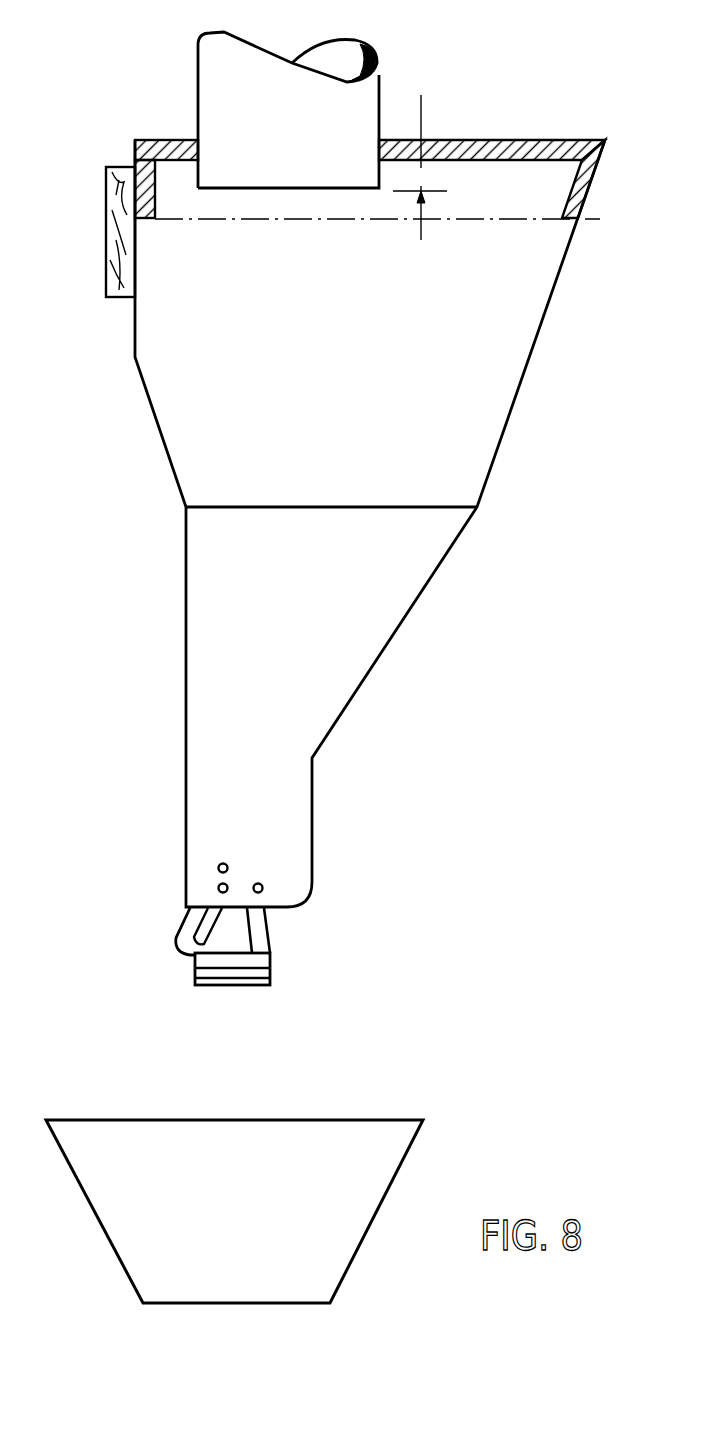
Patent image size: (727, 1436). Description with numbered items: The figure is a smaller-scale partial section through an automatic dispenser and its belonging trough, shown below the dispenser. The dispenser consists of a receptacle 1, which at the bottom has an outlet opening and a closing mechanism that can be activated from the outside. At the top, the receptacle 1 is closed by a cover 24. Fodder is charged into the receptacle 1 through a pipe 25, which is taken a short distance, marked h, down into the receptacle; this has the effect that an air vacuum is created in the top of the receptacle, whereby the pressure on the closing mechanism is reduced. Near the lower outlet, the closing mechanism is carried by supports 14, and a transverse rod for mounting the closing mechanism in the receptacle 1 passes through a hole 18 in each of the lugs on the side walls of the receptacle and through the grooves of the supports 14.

The receptacle 1 is at (522, 332).
The support 14 is at (287, 868).
The hole 18 is at (216, 888).
The cover 24 is at (508, 140).
The pipe 25 is at (353, 125).